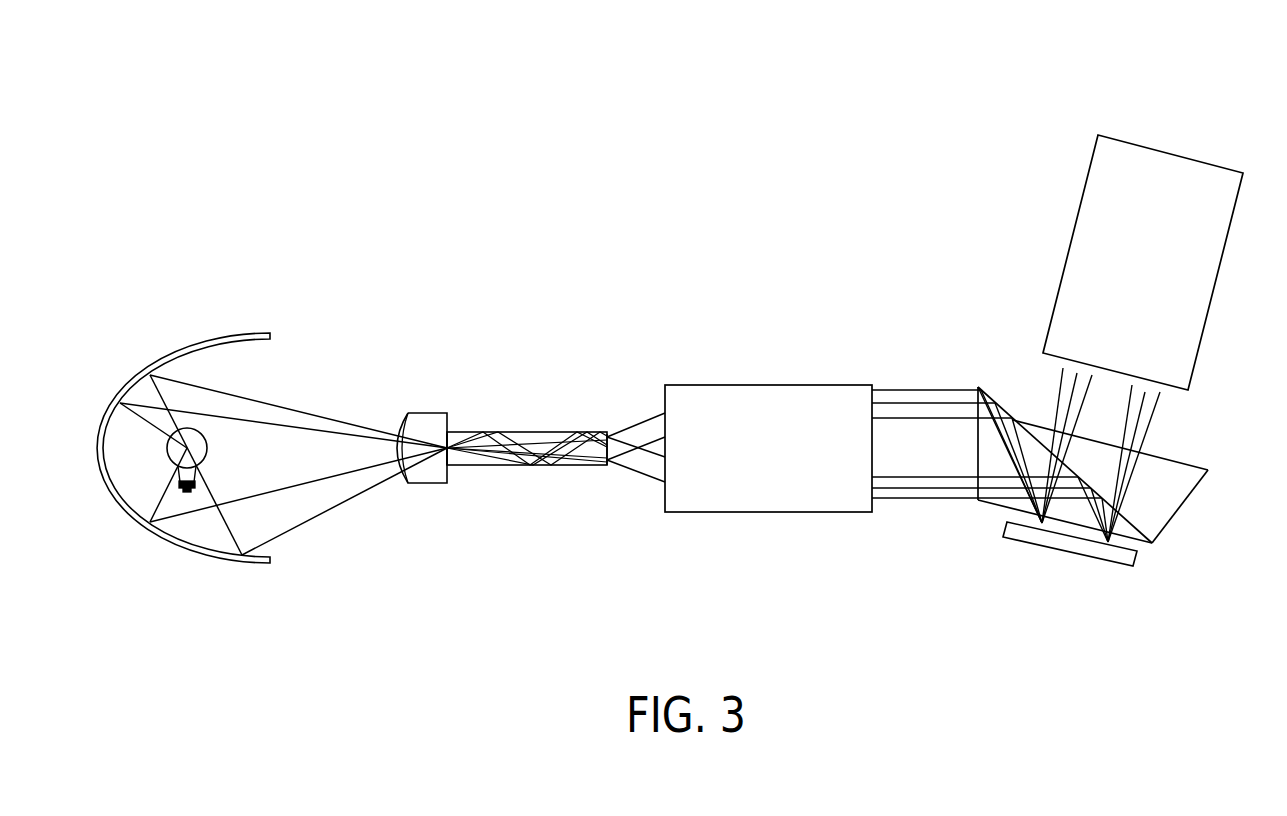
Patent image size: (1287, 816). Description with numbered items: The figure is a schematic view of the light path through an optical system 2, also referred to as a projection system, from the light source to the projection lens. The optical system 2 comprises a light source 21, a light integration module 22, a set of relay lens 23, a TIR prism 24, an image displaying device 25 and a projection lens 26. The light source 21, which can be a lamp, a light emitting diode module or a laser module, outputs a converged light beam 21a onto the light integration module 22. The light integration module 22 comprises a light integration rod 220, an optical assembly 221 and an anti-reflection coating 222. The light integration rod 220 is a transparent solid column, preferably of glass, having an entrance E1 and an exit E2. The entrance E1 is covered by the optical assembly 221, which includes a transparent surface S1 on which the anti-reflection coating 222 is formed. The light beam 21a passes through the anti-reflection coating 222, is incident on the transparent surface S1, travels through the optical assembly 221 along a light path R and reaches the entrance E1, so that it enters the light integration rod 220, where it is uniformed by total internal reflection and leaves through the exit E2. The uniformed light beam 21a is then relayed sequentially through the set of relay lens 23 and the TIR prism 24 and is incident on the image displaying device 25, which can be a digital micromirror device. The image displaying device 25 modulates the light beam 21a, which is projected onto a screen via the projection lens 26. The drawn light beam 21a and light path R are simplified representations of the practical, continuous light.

The optical system 2 is at (227, 75).
The light source 21 is at (205, 347).
The light beam 21a is at (307, 413).
The light integration module 22 is at (587, 373).
The light integration rod 220 is at (552, 437).
The optical assembly 221 is at (433, 427).
The anti-reflection coating 222 is at (397, 437).
The light path R is at (422, 432).
The transparent surface S1 is at (408, 463).
The entrance E1 is at (450, 462).
The exit E2 is at (610, 451).
The set of relay lens 23 is at (773, 398).
The TIR prism 24 is at (1068, 502).
The image displaying device 25 is at (1050, 538).
The projection lens 26 is at (1187, 303).